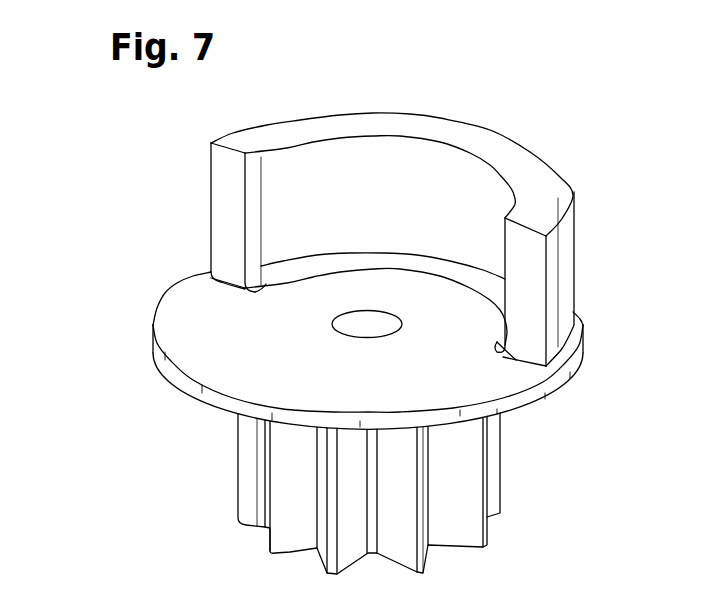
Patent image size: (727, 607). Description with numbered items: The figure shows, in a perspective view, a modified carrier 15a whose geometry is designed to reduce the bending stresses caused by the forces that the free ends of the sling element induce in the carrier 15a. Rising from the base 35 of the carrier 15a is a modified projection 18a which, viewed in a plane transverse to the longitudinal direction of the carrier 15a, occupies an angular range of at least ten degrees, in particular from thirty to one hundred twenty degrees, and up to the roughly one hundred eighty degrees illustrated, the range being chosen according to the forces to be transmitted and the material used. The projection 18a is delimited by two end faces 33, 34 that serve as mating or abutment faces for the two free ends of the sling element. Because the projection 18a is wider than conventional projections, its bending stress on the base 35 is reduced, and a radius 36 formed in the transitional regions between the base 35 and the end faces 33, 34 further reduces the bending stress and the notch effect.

The carrier 15a is at (112, 371).
The projection 18a is at (497, 148).
The end face 33 is at (228, 190).
The end face 34 is at (530, 283).
The base 35 is at (487, 373).
The radius 36 is at (230, 272).